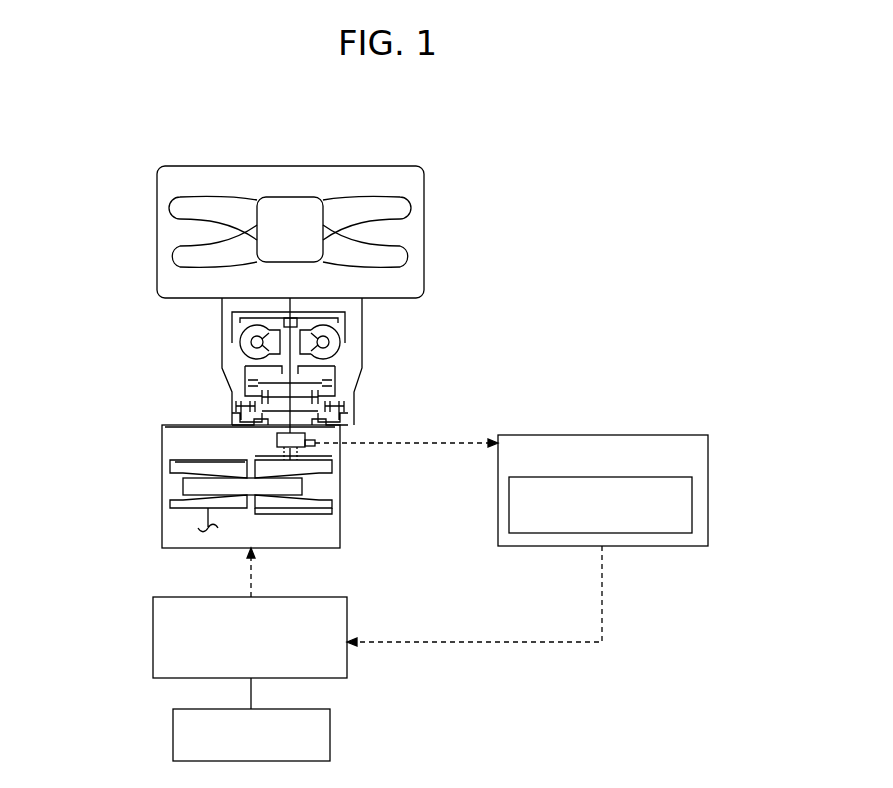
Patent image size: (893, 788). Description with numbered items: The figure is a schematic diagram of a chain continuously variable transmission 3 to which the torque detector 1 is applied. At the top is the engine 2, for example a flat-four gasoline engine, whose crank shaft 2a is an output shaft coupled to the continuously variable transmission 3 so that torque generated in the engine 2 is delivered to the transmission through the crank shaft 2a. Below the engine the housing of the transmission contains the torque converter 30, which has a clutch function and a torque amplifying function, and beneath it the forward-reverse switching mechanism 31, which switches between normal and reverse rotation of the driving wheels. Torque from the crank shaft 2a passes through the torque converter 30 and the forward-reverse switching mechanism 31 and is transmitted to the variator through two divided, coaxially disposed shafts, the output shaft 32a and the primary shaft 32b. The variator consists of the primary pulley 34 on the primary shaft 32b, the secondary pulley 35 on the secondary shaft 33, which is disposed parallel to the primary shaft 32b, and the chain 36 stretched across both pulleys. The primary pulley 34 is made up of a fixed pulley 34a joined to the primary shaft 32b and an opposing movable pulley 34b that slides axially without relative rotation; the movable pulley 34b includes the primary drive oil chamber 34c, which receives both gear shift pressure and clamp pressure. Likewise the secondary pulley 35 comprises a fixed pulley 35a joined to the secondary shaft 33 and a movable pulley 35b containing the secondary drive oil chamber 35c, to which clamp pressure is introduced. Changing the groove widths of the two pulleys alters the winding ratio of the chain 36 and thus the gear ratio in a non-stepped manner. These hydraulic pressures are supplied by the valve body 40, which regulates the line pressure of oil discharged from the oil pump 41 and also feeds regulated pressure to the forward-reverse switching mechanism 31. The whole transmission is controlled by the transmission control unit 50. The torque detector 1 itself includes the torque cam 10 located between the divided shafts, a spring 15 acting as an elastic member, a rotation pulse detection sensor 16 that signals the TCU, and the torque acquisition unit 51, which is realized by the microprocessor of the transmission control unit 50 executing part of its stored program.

The torque detector 1 is at (467, 329).
The engine 2 is at (157, 213).
The crank shaft 2a is at (288, 306).
The continuously variable transmission 3 is at (152, 553).
The torque cam 10 is at (308, 436).
The spring 15 is at (310, 454).
The rotation pulse detection sensor 16 is at (312, 441).
The torque converter 30 is at (222, 340).
The forward-reverse switching mechanism 31 is at (232, 400).
The output shaft 32a is at (220, 429).
The primary shaft 32b is at (262, 451).
The secondary shaft 33 is at (208, 521).
The primary pulley 34 is at (363, 525).
The fixed pulley 34a is at (340, 463).
The movable pulley 34b is at (340, 500).
The primary drive oil chamber 34c is at (294, 505).
The secondary pulley 35 is at (139, 475).
The fixed pulley 35a is at (175, 503).
The movable pulley 35b is at (182, 478).
The secondary drive oil chamber 35c is at (200, 465).
The chain 36 is at (180, 490).
The valve body 40 is at (347, 617).
The oil pump 41 is at (330, 735).
The transmission control unit 50 is at (708, 447).
The torque acquisition unit 51 is at (692, 493).